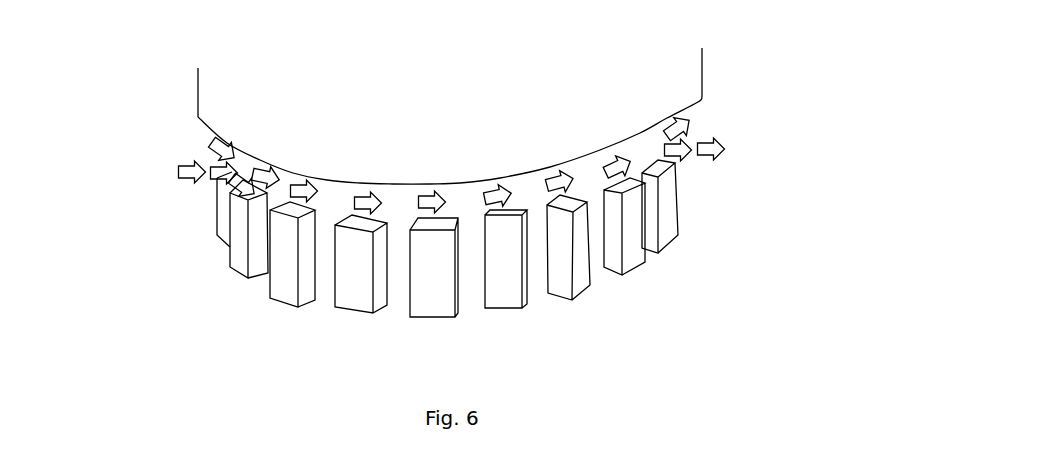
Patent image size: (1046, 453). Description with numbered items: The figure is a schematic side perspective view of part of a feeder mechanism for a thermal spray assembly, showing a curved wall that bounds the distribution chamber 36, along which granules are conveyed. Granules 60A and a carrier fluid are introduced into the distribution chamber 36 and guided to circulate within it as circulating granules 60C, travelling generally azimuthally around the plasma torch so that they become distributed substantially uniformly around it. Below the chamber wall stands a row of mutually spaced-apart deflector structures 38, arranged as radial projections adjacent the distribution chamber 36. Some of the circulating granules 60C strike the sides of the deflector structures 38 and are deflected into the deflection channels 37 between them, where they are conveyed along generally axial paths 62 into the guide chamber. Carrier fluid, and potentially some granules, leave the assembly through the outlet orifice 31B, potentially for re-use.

The distribution chamber 36 is at (638, 153).
The deflector structures 38 is at (633, 237).
The deflection channels 37 is at (535, 263).
The granules 60A is at (161, 178).
The circulating granules 60C is at (196, 141).
The outlet orifice 31B is at (732, 149).
The generally axial paths 62 is at (445, 210).